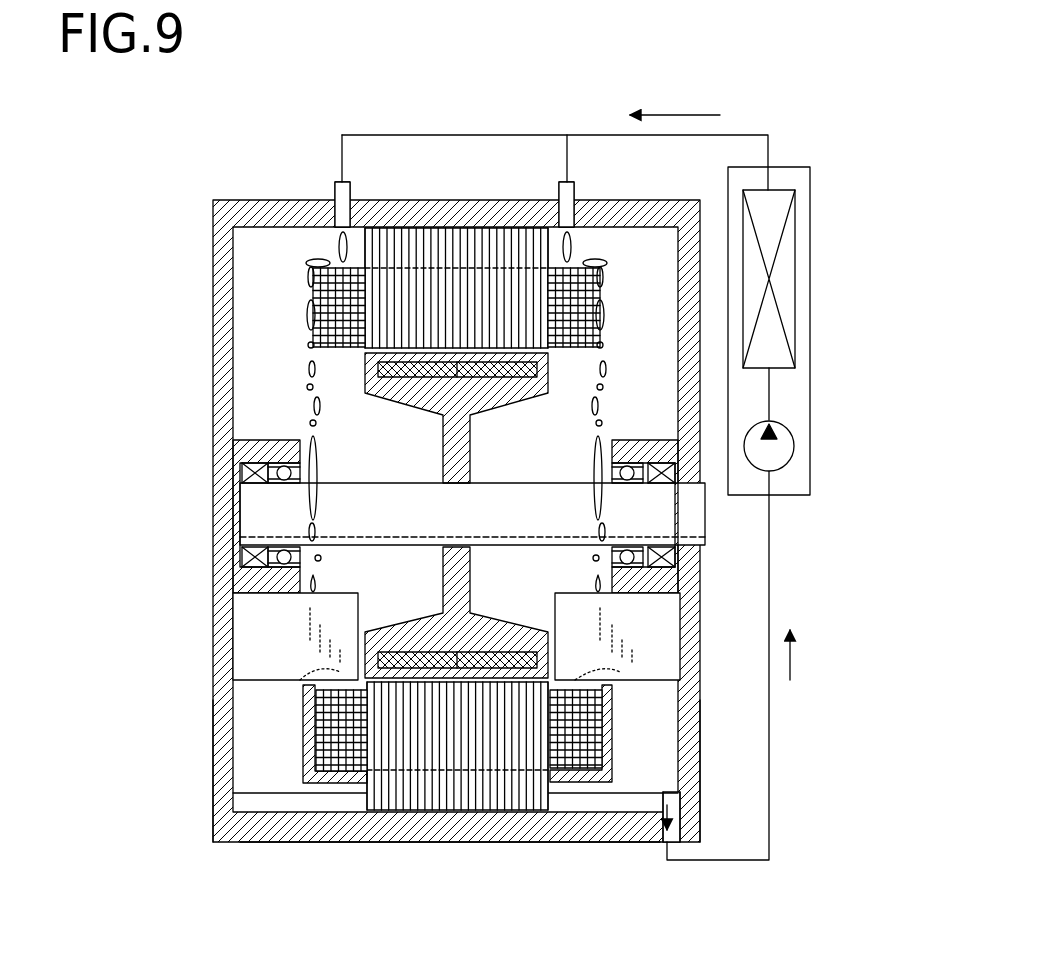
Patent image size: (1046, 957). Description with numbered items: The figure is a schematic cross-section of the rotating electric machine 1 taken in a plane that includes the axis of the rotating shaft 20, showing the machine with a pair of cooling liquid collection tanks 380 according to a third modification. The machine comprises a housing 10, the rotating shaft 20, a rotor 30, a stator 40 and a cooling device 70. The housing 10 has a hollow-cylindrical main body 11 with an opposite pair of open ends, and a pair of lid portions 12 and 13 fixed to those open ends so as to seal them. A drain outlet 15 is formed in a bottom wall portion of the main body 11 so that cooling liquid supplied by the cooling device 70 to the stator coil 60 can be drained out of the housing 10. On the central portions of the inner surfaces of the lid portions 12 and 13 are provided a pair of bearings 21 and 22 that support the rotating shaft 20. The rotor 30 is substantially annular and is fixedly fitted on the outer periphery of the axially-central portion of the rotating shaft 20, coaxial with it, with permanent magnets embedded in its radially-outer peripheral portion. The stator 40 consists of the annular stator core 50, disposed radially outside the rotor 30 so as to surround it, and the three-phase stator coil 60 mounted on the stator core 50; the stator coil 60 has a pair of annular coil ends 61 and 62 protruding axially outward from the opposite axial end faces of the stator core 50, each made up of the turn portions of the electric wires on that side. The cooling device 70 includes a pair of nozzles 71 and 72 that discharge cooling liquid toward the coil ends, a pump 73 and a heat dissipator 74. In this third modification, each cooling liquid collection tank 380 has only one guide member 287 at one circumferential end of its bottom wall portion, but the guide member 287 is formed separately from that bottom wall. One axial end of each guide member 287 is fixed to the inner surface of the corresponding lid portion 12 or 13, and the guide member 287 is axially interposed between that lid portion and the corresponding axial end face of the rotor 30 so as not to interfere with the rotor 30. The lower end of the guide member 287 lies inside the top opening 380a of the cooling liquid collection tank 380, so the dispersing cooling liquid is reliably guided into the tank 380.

The rotating electric machine 1 is at (230, 157).
The housing 10 is at (212, 225).
The main body 11 is at (437, 843).
The lid portion 12 is at (214, 790).
The lid portion 13 is at (698, 780).
The drain outlet 15 is at (662, 843).
The rotating shaft 20 is at (256, 517).
The bearing 21 is at (266, 597).
The bearing 22 is at (645, 597).
The rotor 30 is at (372, 404).
The stator 40 is at (128, 248).
The stator core 50 is at (358, 245).
The stator coil 60 is at (311, 293).
The coil end 61 is at (330, 326).
The coil end 62 is at (596, 318).
The cooling device 70 is at (825, 395).
The nozzle 71 is at (334, 188).
The nozzle 72 is at (575, 190).
The pump 73 is at (792, 448).
The heat dissipator 74 is at (797, 245).
The guide member 287 is at (258, 645).
The cooling liquid collection tank 380 is at (301, 750).
The top opening 380a is at (340, 688).